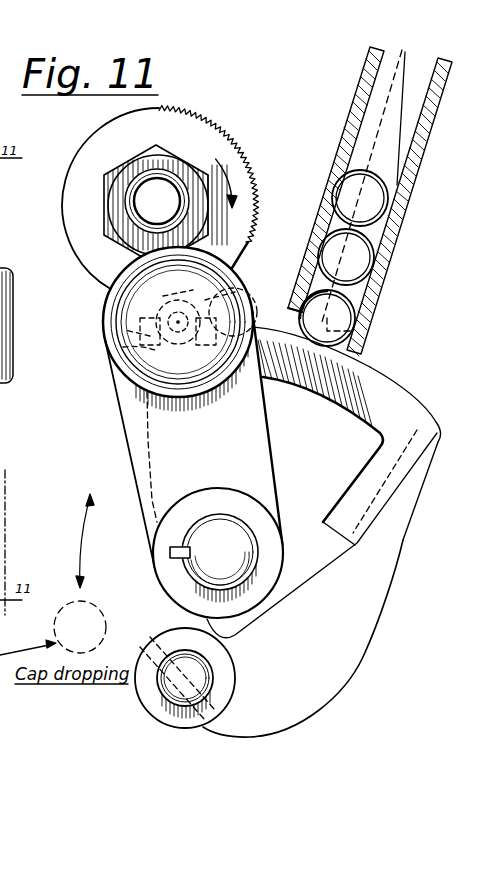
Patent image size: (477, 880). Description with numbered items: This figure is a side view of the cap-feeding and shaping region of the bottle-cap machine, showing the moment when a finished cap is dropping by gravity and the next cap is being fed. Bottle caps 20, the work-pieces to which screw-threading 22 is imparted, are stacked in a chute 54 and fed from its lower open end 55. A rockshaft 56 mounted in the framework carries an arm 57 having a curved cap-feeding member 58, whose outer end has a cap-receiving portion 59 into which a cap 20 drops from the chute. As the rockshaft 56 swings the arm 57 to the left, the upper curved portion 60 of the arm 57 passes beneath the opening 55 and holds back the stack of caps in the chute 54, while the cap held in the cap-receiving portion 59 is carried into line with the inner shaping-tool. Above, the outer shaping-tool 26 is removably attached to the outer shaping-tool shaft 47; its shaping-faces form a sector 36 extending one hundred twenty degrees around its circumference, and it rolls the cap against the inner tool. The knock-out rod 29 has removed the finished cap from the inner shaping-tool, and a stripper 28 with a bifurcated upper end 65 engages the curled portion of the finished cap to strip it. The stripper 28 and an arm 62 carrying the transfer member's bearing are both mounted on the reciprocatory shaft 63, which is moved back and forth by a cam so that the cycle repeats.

The bottle cap 20 is at (240, 298).
The screw-threading 22 is at (197, 290).
The outer shaping-tool 26 is at (112, 140).
The stripper 28 is at (150, 440).
The knock-out rod 29 is at (172, 318).
The sector 36 is at (233, 137).
The outer shaping-tool shaft 47 is at (156, 205).
The chute 54 is at (366, 50).
The lower open end 55 is at (370, 317).
The rockshaft 56 is at (167, 700).
The arm 57 is at (333, 688).
The cap-feeding member 58 is at (393, 402).
The cap-receiving portion 59 is at (267, 388).
The upper curved portion 60 is at (370, 368).
The arm 62 is at (273, 469).
The reciprocatory shaft 63 is at (203, 542).
The bifurcated upper end 65 is at (123, 347).